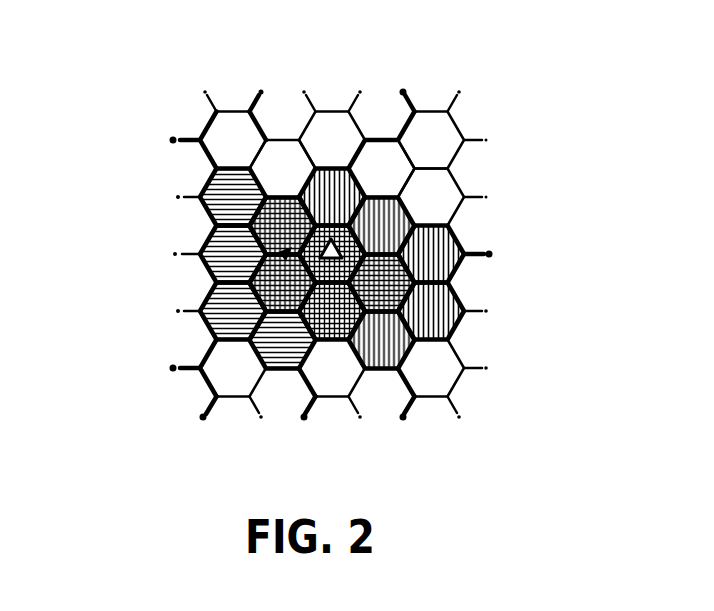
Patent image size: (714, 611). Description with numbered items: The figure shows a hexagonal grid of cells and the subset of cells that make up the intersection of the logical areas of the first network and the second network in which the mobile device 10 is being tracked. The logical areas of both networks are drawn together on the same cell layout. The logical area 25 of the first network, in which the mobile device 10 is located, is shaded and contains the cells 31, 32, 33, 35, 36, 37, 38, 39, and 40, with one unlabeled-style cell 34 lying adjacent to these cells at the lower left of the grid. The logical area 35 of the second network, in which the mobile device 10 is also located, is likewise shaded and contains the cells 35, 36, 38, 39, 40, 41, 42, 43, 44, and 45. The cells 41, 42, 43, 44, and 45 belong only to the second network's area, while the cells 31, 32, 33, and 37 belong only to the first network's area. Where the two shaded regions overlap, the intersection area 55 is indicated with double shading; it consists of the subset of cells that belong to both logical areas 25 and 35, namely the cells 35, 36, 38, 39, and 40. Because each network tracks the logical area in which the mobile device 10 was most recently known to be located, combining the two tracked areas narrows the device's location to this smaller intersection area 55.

The mobile device 10 is at (327, 243).
The logical area 25 is at (215, 228).
The cell 31 is at (245, 208).
The cell 32 is at (245, 264).
The cell 33 is at (245, 322).
The cell 34 is at (245, 378).
The logical area 35 is at (294, 236).
The cell 36 is at (294, 294).
The cell 37 is at (294, 350).
The cell 38 is at (337, 243).
The cell 39 is at (344, 322).
The cell 40 is at (394, 294).
The cell 41 is at (344, 208).
The cell 42 is at (394, 236).
The cell 43 is at (443, 264).
The cell 44 is at (443, 322).
The cell 45 is at (394, 350).
The intersection area 55 is at (285, 257).